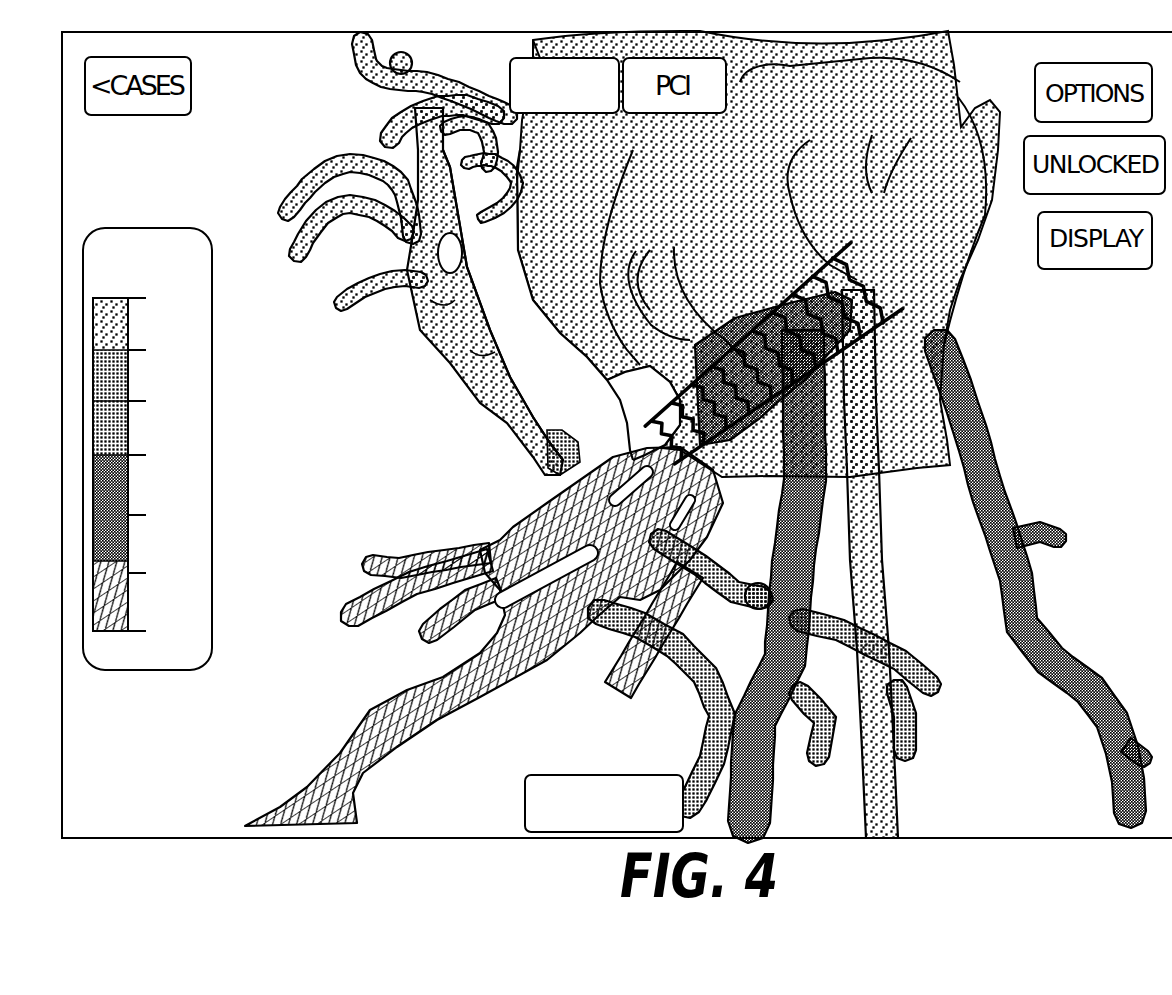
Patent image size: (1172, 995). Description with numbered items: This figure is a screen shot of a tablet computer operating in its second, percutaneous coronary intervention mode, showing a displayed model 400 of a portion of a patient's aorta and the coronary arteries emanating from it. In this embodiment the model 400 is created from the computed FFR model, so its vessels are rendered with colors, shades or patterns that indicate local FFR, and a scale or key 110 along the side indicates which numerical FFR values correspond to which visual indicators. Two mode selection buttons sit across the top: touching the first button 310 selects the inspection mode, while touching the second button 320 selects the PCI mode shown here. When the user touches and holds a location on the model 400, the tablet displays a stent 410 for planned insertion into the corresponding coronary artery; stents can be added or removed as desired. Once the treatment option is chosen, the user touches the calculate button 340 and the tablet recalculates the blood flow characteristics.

The scale or key 110 is at (212, 330).
The first mode selection button 310 is at (510, 73).
The second mode selection button 320 is at (957, 84).
The calculate button 340 is at (570, 775).
The model 400 is at (1012, 388).
The stent 410 is at (613, 392).